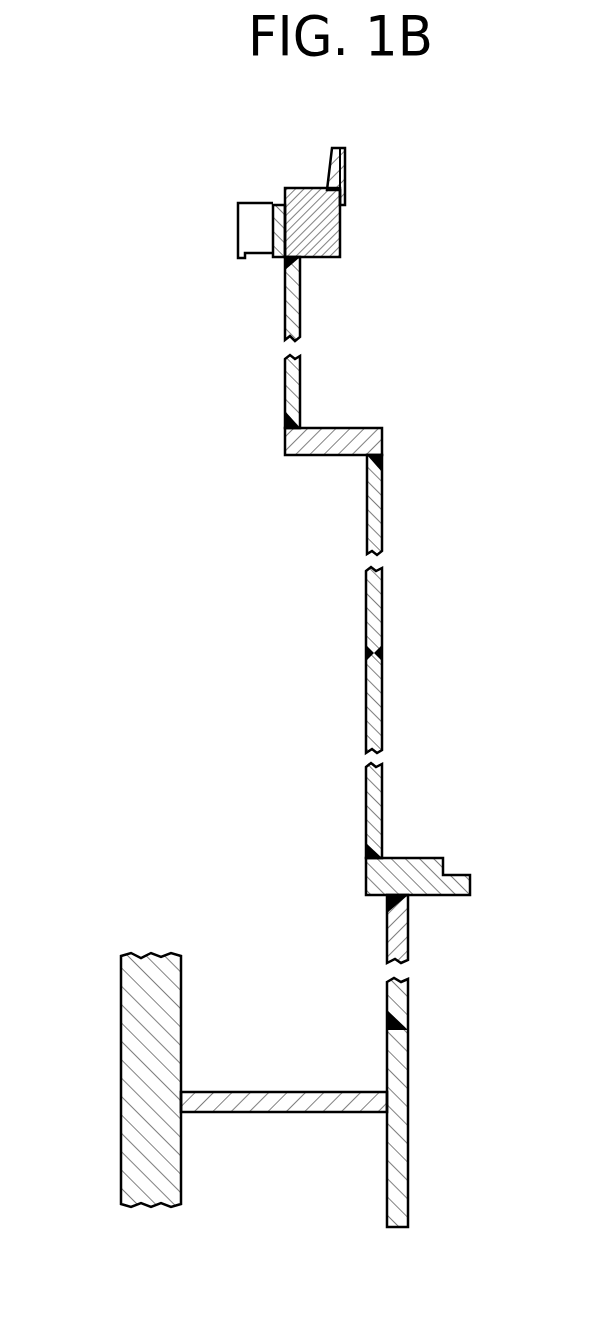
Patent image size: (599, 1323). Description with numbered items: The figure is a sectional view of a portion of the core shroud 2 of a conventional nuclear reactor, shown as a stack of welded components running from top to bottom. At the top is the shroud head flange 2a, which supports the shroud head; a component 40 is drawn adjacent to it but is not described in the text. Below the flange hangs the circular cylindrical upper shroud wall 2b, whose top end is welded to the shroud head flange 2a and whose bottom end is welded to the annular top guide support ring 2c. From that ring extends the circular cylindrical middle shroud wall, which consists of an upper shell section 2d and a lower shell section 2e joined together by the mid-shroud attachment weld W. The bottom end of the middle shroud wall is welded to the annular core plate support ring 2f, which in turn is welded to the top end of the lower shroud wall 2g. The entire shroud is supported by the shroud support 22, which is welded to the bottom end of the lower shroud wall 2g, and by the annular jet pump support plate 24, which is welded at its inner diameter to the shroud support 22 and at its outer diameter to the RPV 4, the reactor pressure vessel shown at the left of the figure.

The component 40 is at (346, 179).
The core shroud 2 is at (384, 600).
The shroud head flange 2a is at (326, 231).
The upper shroud wall 2b is at (301, 319).
The top guide support ring 2c is at (338, 428).
The upper shell section 2d is at (366, 582).
The lower shell section 2e is at (383, 782).
The core plate support ring 2f is at (366, 882).
The lower shroud wall 2g is at (387, 992).
The mid-shroud attachment weld W is at (386, 652).
The RPV 4 is at (120, 1092).
The shroud support 22 is at (409, 1147).
The jet pump support plate 24 is at (265, 1112).